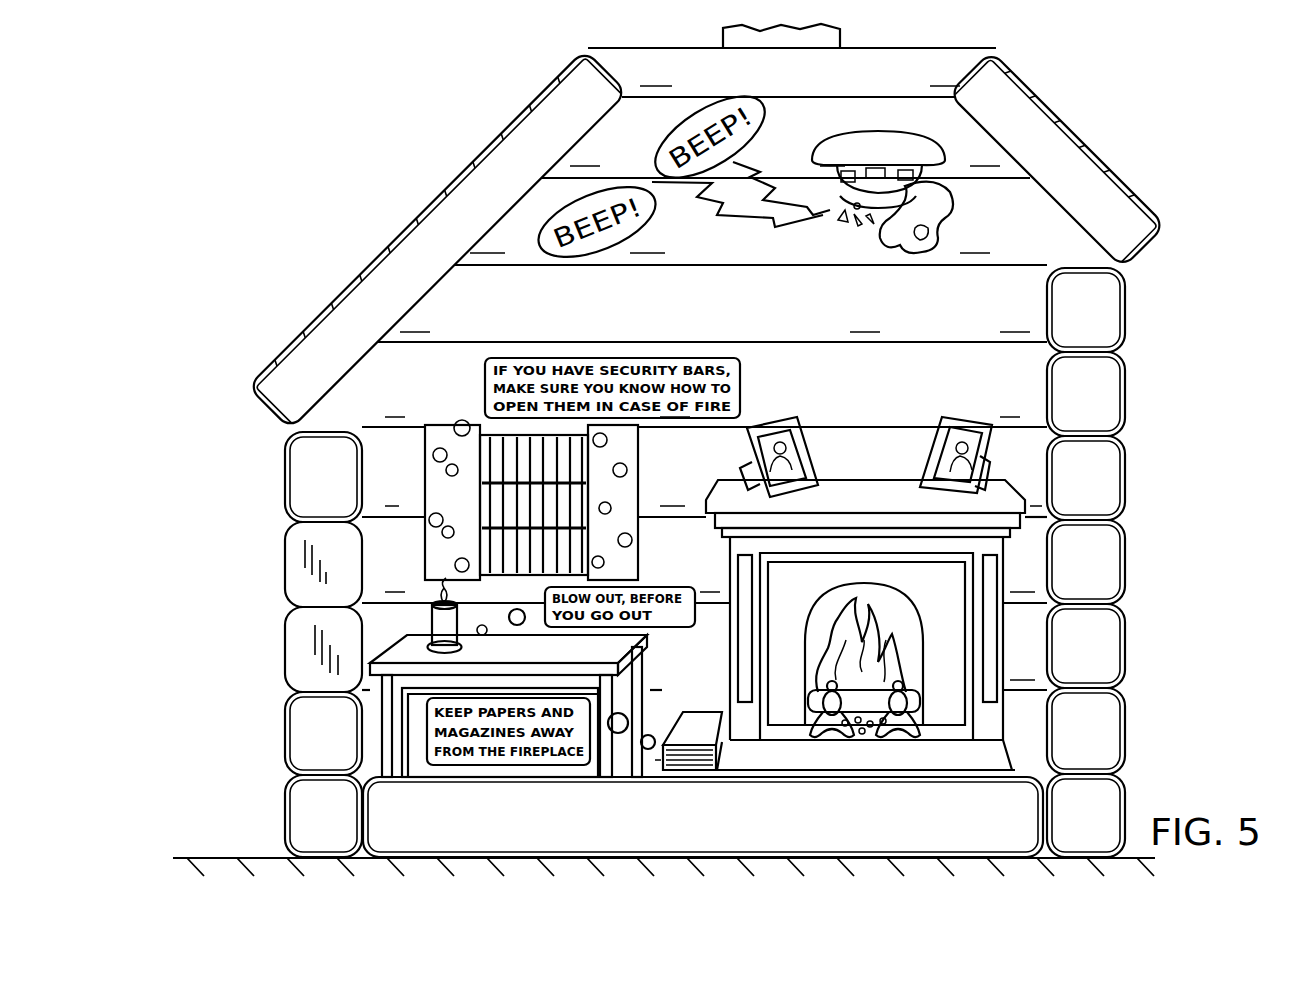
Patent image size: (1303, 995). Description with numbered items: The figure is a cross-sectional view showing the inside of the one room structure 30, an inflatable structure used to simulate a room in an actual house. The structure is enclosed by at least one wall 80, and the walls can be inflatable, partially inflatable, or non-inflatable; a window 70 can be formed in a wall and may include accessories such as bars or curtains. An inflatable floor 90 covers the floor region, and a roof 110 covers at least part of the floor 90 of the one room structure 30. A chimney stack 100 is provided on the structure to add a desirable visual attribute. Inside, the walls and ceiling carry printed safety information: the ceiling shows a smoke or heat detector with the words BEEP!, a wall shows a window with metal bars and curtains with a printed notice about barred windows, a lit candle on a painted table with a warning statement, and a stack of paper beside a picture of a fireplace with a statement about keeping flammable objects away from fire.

The chimney stack 100 is at (832, 40).
The one room structure 30 is at (715, 234).
The roof 110 is at (468, 163).
The wall 80 is at (283, 478).
The window 70 is at (300, 568).
The inflatable floor 90 is at (980, 777).